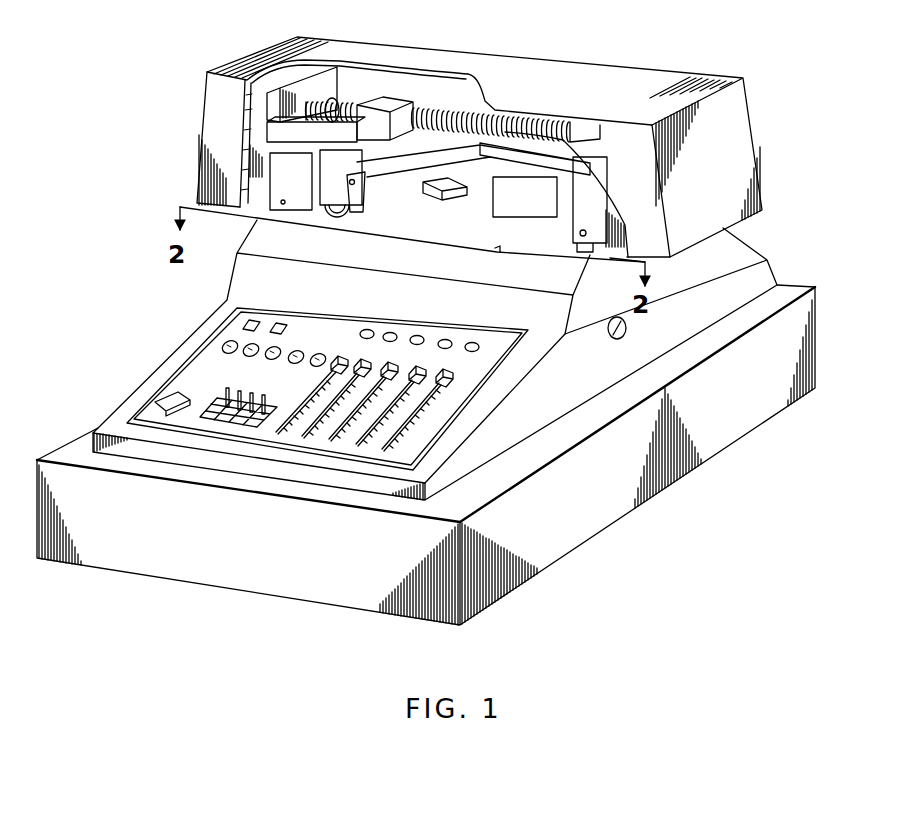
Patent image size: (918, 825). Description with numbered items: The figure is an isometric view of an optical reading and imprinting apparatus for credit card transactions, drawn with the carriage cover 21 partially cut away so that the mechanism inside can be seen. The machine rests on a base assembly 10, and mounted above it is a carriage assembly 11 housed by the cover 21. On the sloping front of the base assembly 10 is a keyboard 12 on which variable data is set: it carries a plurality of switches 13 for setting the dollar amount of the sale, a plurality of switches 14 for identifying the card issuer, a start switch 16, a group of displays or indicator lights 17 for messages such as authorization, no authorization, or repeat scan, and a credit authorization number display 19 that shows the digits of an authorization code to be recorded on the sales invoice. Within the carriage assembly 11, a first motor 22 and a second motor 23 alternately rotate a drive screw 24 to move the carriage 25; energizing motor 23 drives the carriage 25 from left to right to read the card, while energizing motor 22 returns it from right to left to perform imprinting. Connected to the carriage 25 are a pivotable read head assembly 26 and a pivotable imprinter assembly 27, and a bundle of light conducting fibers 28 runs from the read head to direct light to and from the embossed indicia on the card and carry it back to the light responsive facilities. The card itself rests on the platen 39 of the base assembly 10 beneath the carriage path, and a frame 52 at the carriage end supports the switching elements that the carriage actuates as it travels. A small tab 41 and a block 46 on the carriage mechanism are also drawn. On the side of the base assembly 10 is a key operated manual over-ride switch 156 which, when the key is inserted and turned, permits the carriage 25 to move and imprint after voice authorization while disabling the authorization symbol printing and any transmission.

The base assembly 10 is at (574, 566).
The carriage assembly 11 is at (426, 320).
The keyboard 12 is at (327, 405).
The switches 13 is at (457, 373).
The switches 14 is at (230, 418).
The start switch 16 is at (157, 400).
The displays or indicator lights 17 is at (225, 345).
The credit authorization number display 19 is at (247, 323).
The cover 21 is at (205, 104).
The first motor 22 is at (300, 66).
The second motor 23 is at (608, 187).
The drive screw 24 is at (413, 113).
The carriage 25 is at (328, 190).
The pivotable read head assembly 26 is at (442, 204).
The pivotable imprinter assembly 27 is at (340, 232).
The bundle of light conducting fibers 28 is at (457, 133).
The platen 39 is at (407, 222).
The stop tab 41 is at (498, 254).
The nut block 46 is at (393, 100).
The frame 52 is at (293, 180).
The key operated manual over-ride switch 156 is at (608, 338).